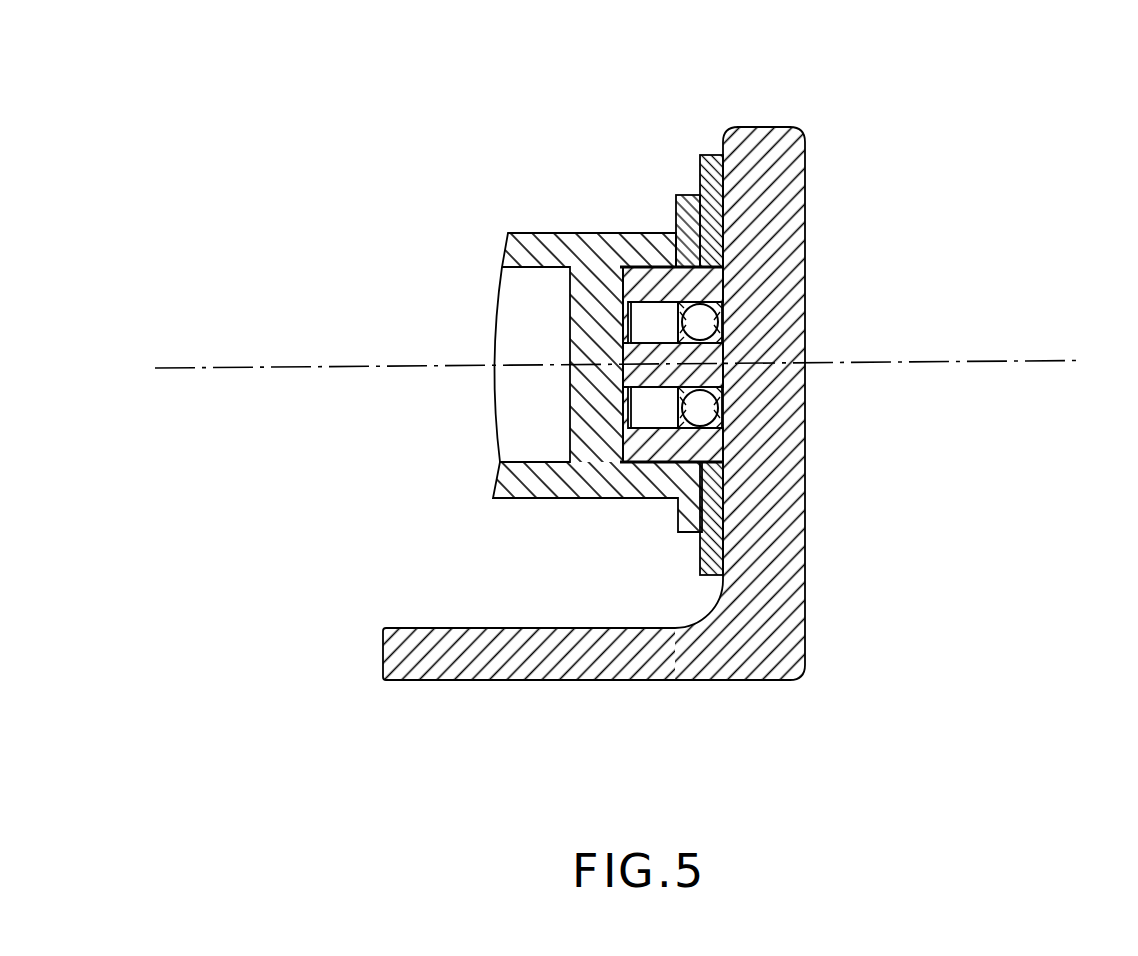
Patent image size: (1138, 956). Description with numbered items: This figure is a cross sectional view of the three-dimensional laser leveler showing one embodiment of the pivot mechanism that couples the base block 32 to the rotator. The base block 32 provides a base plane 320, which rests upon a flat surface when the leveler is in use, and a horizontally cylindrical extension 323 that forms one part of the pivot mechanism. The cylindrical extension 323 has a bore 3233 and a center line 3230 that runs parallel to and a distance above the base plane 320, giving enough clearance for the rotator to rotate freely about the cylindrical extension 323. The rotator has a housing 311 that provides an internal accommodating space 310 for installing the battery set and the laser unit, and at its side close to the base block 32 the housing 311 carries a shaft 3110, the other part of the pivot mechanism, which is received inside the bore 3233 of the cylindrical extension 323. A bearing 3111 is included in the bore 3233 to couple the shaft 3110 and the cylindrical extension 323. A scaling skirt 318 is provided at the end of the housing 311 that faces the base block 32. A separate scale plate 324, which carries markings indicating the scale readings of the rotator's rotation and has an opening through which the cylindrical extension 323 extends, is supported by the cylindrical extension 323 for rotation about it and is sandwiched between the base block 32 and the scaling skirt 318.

The base block 32 is at (784, 260).
The base plane 320 is at (645, 680).
The housing 311 is at (570, 240).
The internal accommodating space 310 is at (522, 418).
The scaling skirt 318 is at (675, 196).
The scale plate 324 is at (704, 153).
The cylindrical extension 323 is at (650, 462).
The bore 3233 is at (640, 322).
The bearing 3111 is at (707, 413).
The shaft 3110 is at (710, 373).
The center line 3230 is at (960, 360).